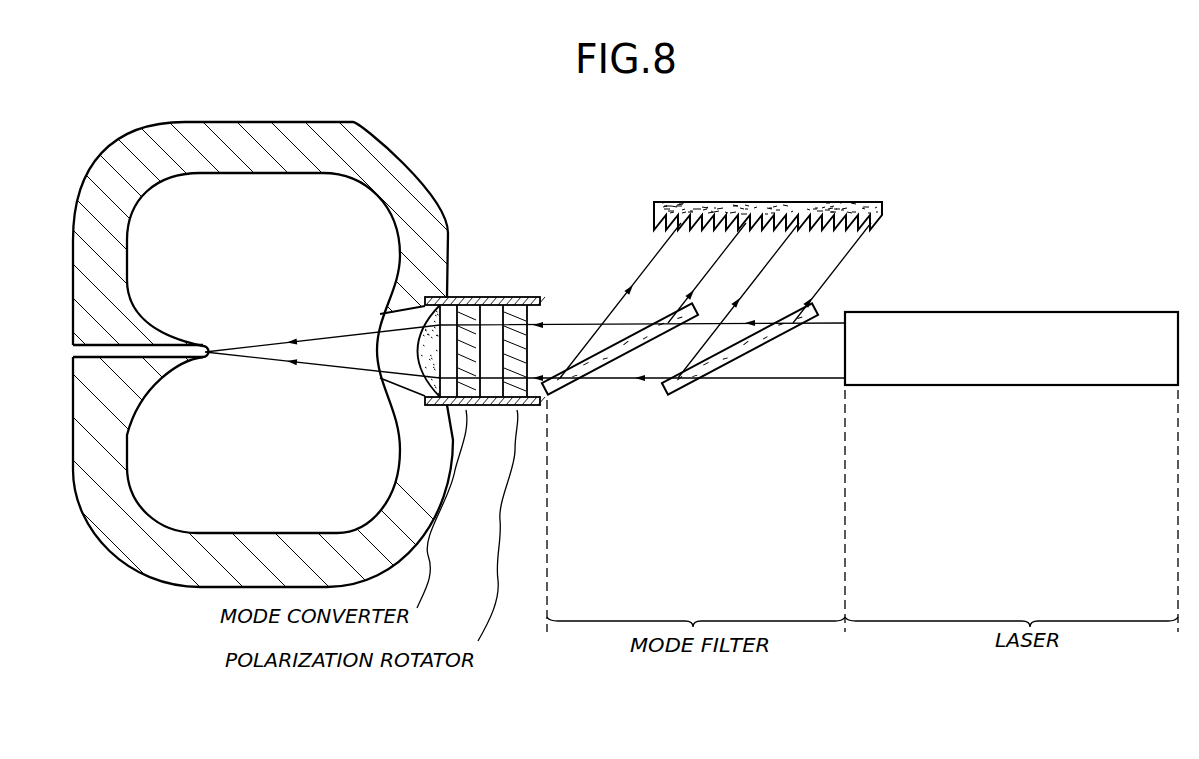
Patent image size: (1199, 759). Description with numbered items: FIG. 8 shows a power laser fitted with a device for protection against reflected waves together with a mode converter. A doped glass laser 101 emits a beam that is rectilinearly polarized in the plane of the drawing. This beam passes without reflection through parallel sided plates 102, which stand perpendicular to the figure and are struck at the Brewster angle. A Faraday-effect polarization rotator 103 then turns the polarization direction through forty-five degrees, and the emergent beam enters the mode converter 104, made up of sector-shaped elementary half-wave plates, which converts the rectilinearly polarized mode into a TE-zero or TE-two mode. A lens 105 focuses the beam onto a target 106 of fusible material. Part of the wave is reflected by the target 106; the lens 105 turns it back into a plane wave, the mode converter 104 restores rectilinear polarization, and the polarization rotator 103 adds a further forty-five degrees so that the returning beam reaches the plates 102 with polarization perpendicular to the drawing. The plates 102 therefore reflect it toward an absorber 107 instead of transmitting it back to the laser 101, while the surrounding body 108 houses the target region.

The doped glass laser 101 is at (1025, 348).
The parallel sided plates 102 is at (721, 358).
The Faraday-effect polarization rotator 103 is at (512, 312).
The mode converter 104 is at (466, 312).
The lens 105 is at (418, 346).
The target 106 is at (206, 347).
The absorber 107 is at (770, 202).
The resonator body 108 is at (258, 128).